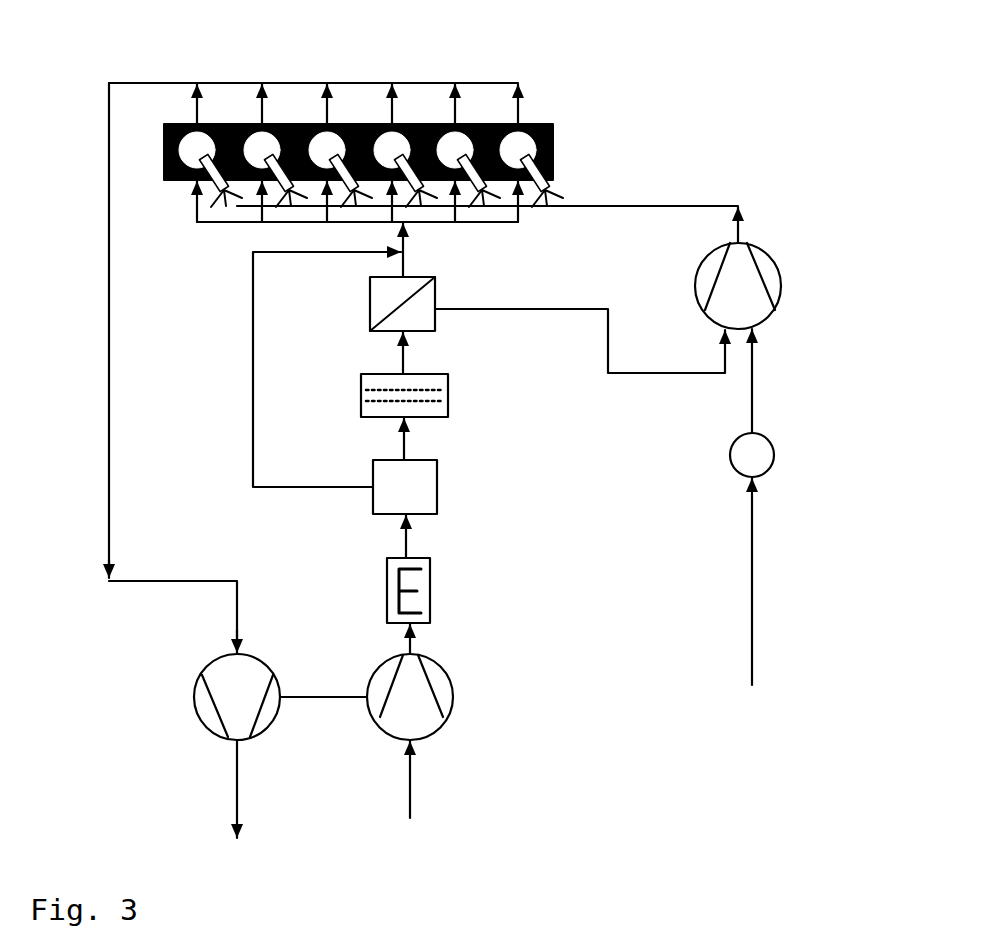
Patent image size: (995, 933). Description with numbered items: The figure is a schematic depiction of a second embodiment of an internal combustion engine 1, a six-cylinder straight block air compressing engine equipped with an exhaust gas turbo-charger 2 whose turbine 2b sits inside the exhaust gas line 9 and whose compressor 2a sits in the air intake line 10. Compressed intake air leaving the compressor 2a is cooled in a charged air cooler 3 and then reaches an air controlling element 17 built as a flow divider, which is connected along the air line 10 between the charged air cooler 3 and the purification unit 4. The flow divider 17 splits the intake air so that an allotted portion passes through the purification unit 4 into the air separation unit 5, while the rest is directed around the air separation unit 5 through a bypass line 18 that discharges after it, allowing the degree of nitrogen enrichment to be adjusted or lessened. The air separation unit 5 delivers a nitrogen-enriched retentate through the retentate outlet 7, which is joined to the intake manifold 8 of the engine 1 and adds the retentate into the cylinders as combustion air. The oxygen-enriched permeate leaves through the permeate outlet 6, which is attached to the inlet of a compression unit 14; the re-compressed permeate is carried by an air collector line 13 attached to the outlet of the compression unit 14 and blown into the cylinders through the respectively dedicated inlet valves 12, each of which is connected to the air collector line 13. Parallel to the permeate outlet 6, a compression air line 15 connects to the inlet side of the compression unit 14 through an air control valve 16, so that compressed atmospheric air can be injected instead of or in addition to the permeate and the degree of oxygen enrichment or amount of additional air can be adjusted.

The internal combustion engine 1 is at (574, 86).
The exhaust gas turbo-charger 2 is at (331, 731).
The compressor 2a is at (452, 710).
The turbine 2b is at (193, 700).
The charged air cooler 3 is at (430, 590).
The purification unit 4 is at (448, 395).
The air separation unit 5 is at (370, 300).
The permeate outlet 6 is at (490, 310).
The retentate outlet 7 is at (406, 262).
The intake manifold 8 is at (241, 225).
The exhaust gas line 9 is at (108, 172).
The air intake line 10 is at (410, 808).
The inlet valves 12 is at (568, 181).
The air collector line 13 is at (688, 206).
The compression unit 14 is at (781, 258).
The compression air line 15 is at (752, 537).
The air control valve 16 is at (773, 445).
The air controlling element 17 is at (405, 466).
The bypass line 18 is at (252, 408).